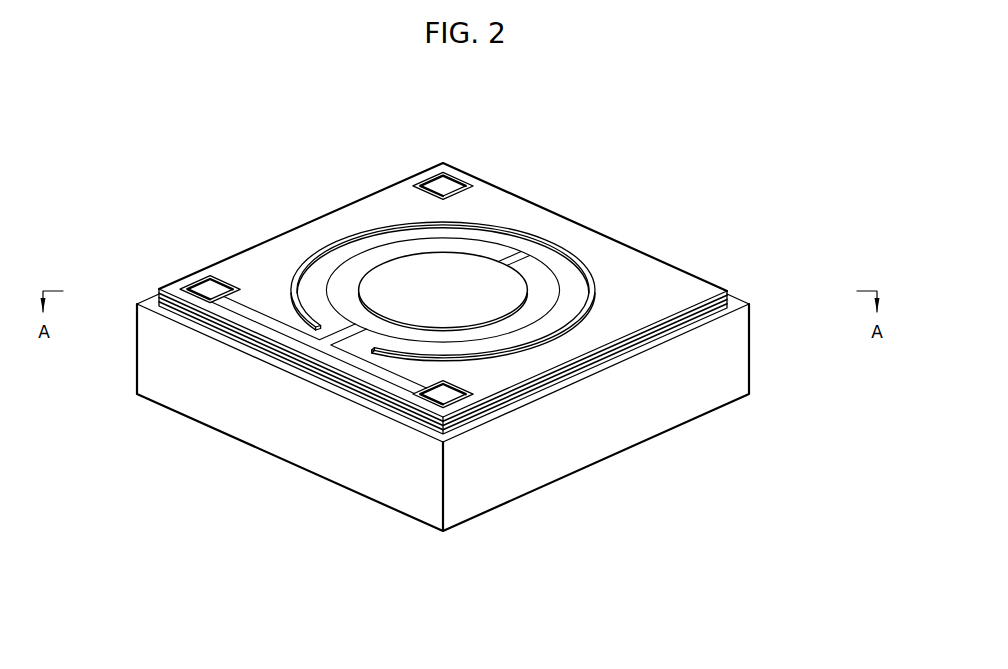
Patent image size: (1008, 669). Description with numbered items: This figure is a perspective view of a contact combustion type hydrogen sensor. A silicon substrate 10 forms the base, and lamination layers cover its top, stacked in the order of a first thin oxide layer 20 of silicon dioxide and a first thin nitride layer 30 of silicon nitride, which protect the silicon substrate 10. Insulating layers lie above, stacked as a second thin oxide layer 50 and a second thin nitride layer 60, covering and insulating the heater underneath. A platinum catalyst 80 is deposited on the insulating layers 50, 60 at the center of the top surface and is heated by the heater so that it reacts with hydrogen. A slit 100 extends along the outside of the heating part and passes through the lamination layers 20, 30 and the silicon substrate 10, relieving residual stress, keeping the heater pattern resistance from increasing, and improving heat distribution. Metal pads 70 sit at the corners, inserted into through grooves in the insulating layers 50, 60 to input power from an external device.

The silicon substrate 10 is at (730, 378).
The first thin oxide layer 20 is at (746, 305).
The first thin nitride layer 30 is at (728, 300).
The second thin oxide layer 50 is at (725, 297).
The second thin nitride layer 60 is at (710, 290).
The metal pad 70 is at (210, 292).
The platinum catalyst 80 is at (422, 272).
The slit 100 is at (592, 282).